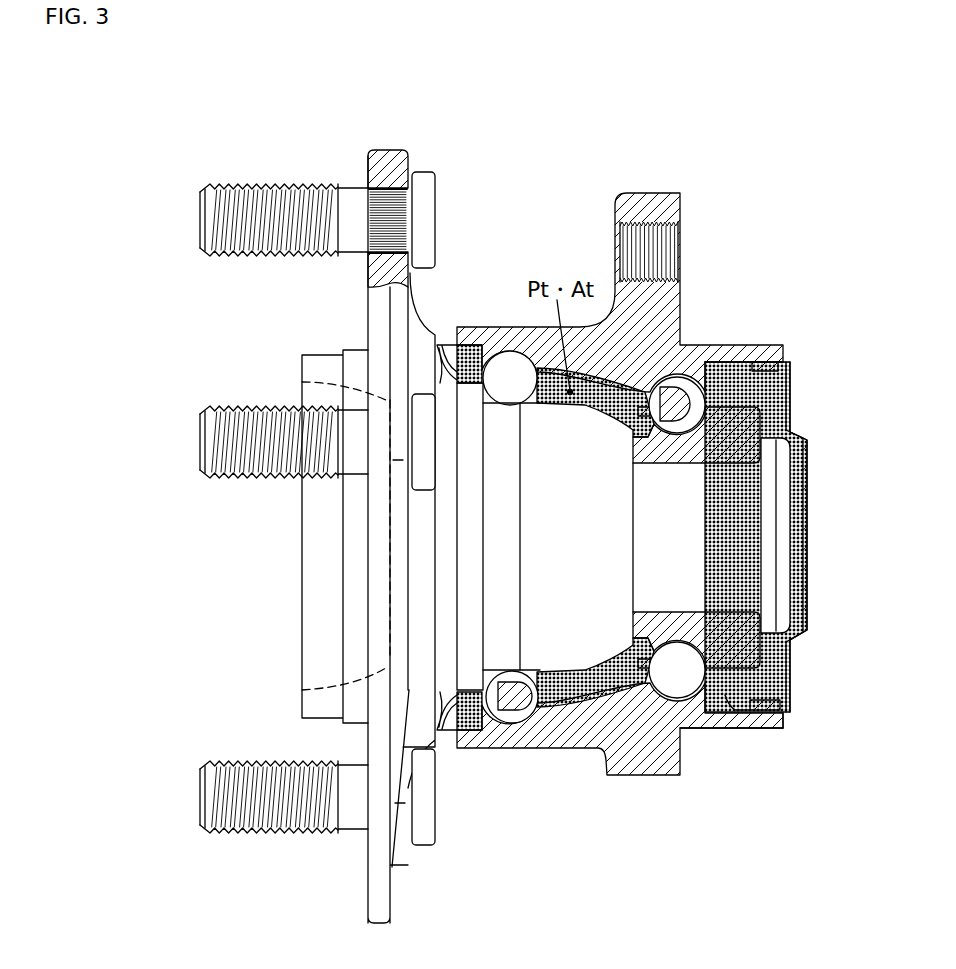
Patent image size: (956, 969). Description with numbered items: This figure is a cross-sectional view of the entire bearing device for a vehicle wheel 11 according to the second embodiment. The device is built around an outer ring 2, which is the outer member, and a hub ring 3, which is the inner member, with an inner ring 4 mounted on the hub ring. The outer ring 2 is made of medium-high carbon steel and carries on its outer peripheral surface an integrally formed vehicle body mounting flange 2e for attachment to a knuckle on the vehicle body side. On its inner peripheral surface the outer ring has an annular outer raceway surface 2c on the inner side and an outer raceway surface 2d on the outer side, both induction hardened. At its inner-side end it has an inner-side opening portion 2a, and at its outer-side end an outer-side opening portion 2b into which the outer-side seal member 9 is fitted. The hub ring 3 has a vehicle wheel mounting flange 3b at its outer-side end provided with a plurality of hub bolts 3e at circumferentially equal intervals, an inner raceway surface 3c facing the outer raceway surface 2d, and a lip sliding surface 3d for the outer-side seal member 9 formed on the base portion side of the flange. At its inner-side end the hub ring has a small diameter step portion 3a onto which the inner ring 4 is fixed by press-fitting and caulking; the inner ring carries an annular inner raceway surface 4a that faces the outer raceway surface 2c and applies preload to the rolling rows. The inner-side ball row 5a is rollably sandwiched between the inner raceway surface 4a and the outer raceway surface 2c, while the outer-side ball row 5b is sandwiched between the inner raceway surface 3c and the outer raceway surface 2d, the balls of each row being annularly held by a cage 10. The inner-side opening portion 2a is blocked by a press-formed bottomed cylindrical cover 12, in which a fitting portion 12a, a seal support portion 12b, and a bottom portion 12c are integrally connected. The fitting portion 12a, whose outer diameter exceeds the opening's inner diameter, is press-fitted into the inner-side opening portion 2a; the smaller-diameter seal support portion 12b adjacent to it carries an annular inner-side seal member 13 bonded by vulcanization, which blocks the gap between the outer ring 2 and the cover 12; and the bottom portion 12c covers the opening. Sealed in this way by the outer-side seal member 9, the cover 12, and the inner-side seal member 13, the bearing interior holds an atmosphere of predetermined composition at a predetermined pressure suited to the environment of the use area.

The bearing device for a vehicle wheel 11 is at (114, 96).
The outer ring 2 is at (650, 142).
The inner-side opening portion 2a is at (748, 712).
The outer-side opening portion 2b is at (477, 735).
The outer raceway surface on the inner side 2c is at (690, 730).
The outer raceway surface on the outer side 2d is at (520, 718).
The vehicle body mounting flange 2e is at (640, 193).
The hub ring 3 is at (421, 124).
The small diameter step portion 3a is at (750, 457).
The vehicle wheel mounting flange 3b is at (388, 152).
The inner raceway surface 3c is at (502, 393).
The lip sliding surface 3d is at (472, 700).
The hub bolt 3e is at (277, 188).
The inner ring 4 is at (755, 647).
The inner raceway surface 4a is at (676, 642).
The inner-side ball row 5a is at (676, 380).
The outer-side ball row 5b is at (505, 352).
The outer-side seal member 9 is at (443, 340).
The cage 10 is at (612, 432).
The cover 12 is at (847, 297).
The fitting portion 12a is at (738, 345).
The seal support portion 12b is at (778, 345).
The bottom portion 12c is at (806, 380).
The inner-side seal member 13 is at (778, 710).